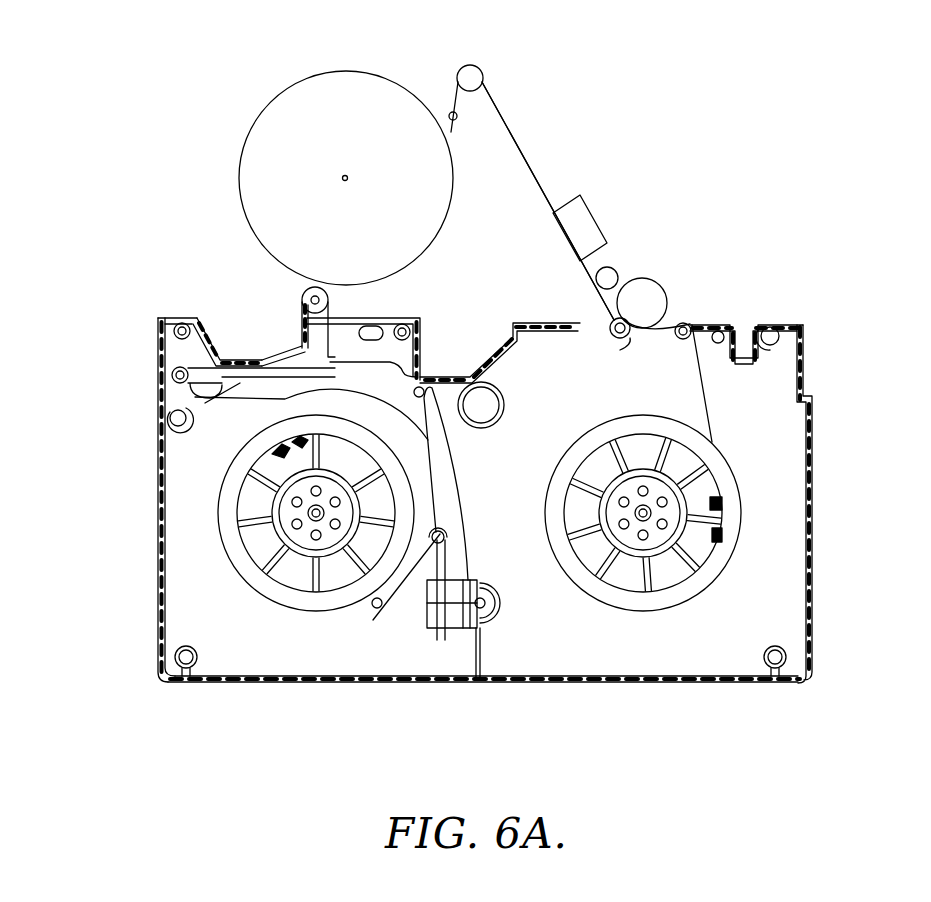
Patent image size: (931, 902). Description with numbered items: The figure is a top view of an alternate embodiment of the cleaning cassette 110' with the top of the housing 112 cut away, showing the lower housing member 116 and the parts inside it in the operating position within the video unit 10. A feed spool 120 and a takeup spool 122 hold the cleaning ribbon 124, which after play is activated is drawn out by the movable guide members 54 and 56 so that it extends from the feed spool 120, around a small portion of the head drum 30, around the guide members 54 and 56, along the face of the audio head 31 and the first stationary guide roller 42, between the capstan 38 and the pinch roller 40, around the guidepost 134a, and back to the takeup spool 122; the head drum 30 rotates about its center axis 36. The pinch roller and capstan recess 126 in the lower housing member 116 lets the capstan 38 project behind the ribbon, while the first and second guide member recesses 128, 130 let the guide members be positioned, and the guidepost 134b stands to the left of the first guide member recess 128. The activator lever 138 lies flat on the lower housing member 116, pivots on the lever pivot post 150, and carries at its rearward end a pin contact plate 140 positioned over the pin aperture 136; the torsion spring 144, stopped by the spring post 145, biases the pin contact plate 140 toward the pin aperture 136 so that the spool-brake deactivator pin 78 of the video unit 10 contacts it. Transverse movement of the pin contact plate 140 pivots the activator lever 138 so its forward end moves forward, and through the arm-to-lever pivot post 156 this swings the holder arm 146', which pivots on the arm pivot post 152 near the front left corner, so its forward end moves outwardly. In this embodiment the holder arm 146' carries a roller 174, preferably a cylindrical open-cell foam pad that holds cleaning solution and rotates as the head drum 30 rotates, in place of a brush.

The video unit 10 is at (128, 160).
The cleaning cassette 110' is at (80, 752).
The housing 112 is at (157, 572).
The lower housing member 116 is at (278, 682).
The head drum 30 is at (264, 150).
The center axis 36 is at (346, 176).
The guide member 56 is at (464, 78).
The guide member 54 is at (456, 120).
The cleaning ribbon 124 is at (530, 168).
The audio head 31 is at (600, 230).
The first stationary guide roller 42 is at (616, 276).
The pinch roller 40 is at (664, 296).
The capstan 38 is at (611, 324).
The pinch roller and capstan recess 126 is at (628, 343).
The guidepost 134b is at (414, 326).
The first guide member recess 128 is at (466, 378).
The guidepost 134a is at (690, 325).
The lever pivot post 150 is at (426, 394).
The roller 174 is at (305, 290).
The second guide member recess 130 is at (262, 358).
The holder arm 146' is at (268, 334).
The arm pivot post 152 is at (176, 374).
The arm-to-lever pivot post 156 is at (160, 416).
The feed spool 120 is at (228, 512).
The takeup spool 122 is at (733, 518).
The activator lever 138 is at (447, 515).
The pin contact plate 140 is at (477, 582).
The spring post 145 is at (373, 620).
The torsion spring 144 is at (385, 606).
The spool-brake deactivator pin 78 is at (484, 628).
The pin aperture 136 is at (500, 610).